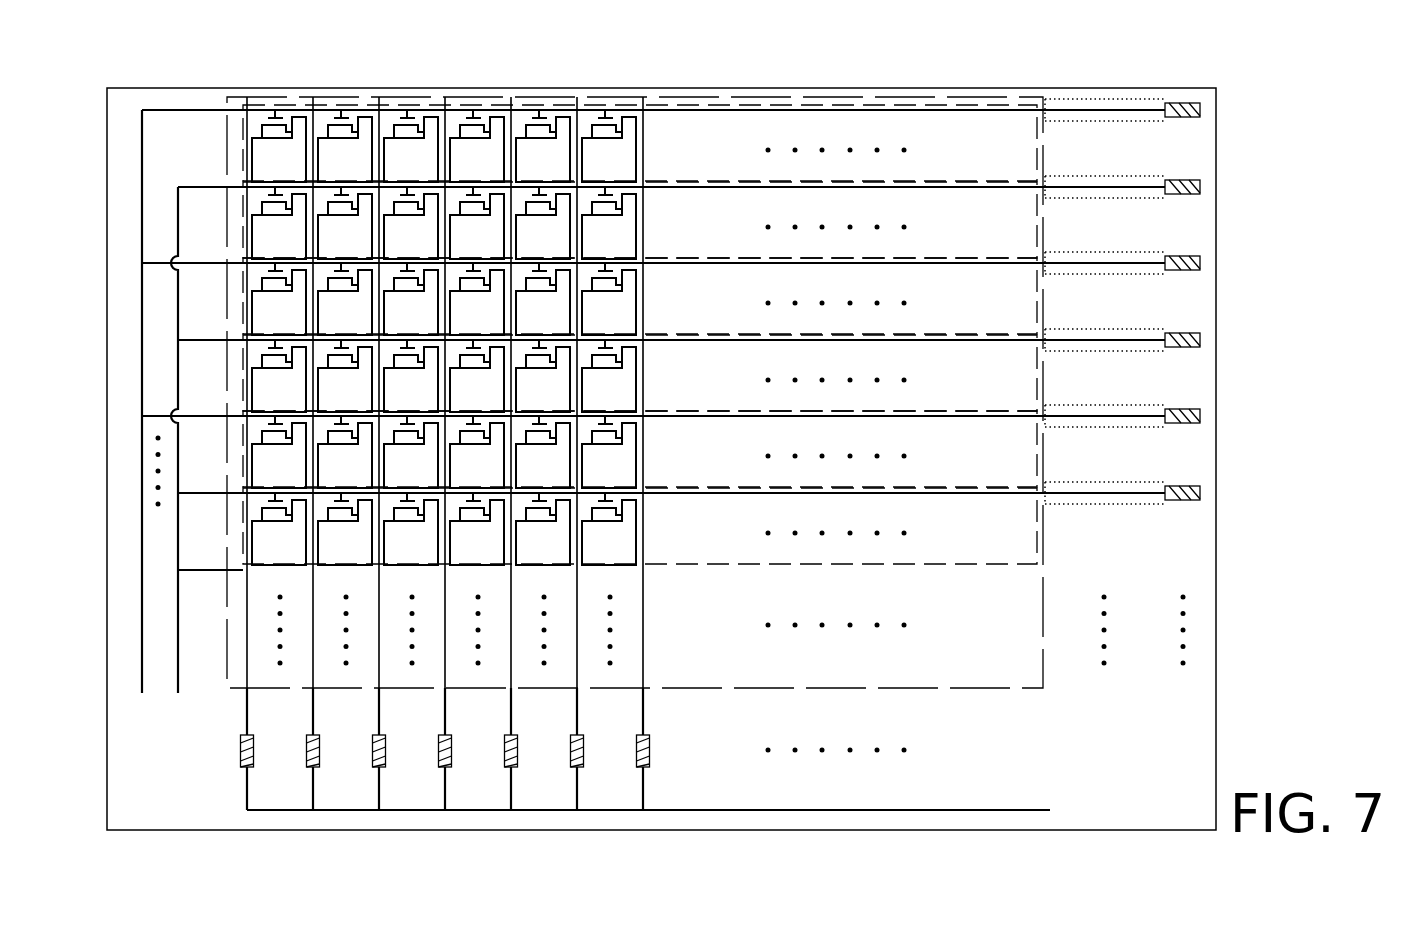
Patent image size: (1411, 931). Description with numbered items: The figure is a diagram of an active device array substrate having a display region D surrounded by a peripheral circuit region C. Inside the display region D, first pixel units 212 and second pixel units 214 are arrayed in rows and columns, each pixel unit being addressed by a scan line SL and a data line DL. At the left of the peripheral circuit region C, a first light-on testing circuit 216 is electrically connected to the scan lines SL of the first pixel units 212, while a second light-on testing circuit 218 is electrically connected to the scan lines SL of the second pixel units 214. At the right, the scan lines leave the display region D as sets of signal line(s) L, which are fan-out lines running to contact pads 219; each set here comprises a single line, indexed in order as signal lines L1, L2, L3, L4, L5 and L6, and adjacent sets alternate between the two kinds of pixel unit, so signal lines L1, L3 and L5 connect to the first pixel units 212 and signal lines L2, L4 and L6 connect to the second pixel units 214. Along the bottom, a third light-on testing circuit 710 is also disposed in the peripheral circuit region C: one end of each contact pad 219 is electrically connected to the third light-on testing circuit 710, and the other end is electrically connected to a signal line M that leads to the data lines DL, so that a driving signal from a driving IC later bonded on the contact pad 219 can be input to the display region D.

The first light-on testing circuit 216 is at (142, 133).
The second light-on testing circuit 218 is at (178, 207).
The contact pad 219 is at (240, 752).
The first pixel unit 212 is at (1038, 154).
The second pixel unit 214 is at (1038, 231).
The third light-on testing circuit 710 is at (247, 795).
The display region D is at (867, 97).
The signal line M is at (247, 705).
The peripheral circuit region C is at (1186, 707).
The data line DL is at (317, 120).
The scan line SL is at (720, 110).
The set of signal line(s) L is at (1132, 95).
The signal line L1 is at (1060, 112).
The signal line L2 is at (1060, 189).
The signal line L3 is at (1060, 265).
The signal line L4 is at (1060, 342).
The signal line L5 is at (1060, 418).
The signal line L6 is at (1060, 495).